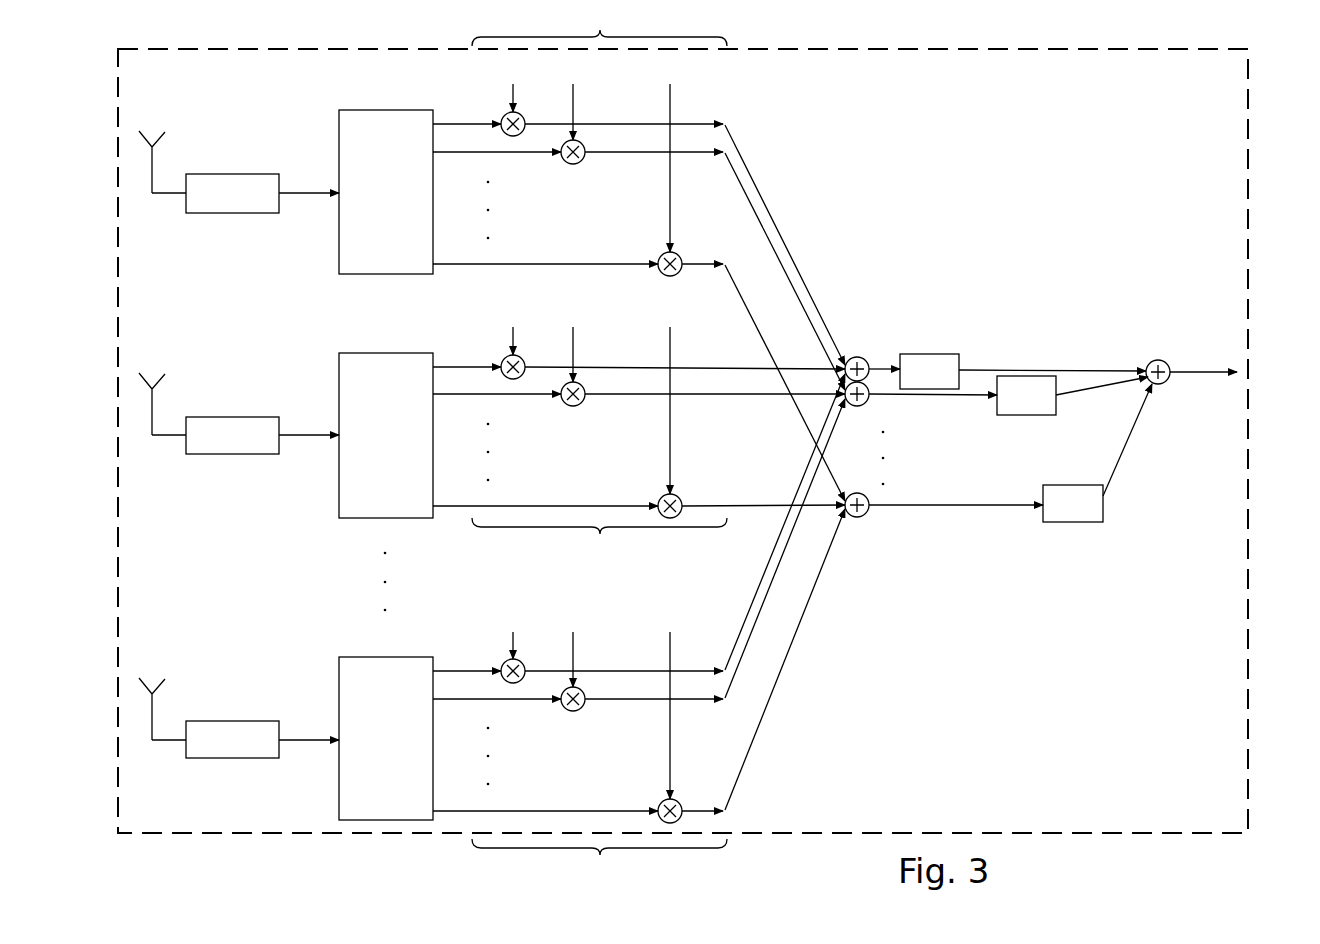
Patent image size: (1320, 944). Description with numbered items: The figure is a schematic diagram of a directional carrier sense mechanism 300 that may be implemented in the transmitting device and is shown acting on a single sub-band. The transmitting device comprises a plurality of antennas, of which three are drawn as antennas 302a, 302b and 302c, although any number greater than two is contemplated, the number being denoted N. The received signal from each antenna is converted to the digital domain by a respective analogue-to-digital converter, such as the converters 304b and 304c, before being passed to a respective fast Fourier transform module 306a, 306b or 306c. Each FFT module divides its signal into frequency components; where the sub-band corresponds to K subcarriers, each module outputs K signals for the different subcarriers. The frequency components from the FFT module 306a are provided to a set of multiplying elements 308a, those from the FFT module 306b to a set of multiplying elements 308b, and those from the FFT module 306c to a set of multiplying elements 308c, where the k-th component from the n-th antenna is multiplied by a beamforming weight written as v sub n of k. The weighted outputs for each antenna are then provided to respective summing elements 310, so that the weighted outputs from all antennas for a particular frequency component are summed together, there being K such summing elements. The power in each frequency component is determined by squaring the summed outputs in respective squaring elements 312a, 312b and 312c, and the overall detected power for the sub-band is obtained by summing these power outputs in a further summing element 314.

The directional carrier sense mechanism 300 is at (1233, 49).
The antenna 302a is at (152, 163).
The antenna 302b is at (152, 405).
The antenna 302c is at (152, 710).
The analogue-to-digital converter 304b is at (270, 417).
The analogue-to-digital converter 304c is at (270, 721).
The fast Fourier transform module 306a is at (270, 174).
The fast Fourier transform module 306b is at (362, 353).
The fast Fourier transform module 306c is at (362, 657).
The set of multiplying elements 308a is at (580, 140).
The set of multiplying elements 308b is at (639, 436).
The set of multiplying elements 308c is at (580, 749).
The summing elements 310 is at (852, 357).
The squaring element 312a is at (955, 354).
The squaring element 312b is at (1048, 376).
The squaring element 312c is at (1046, 485).
The further summing element 314 is at (1160, 360).